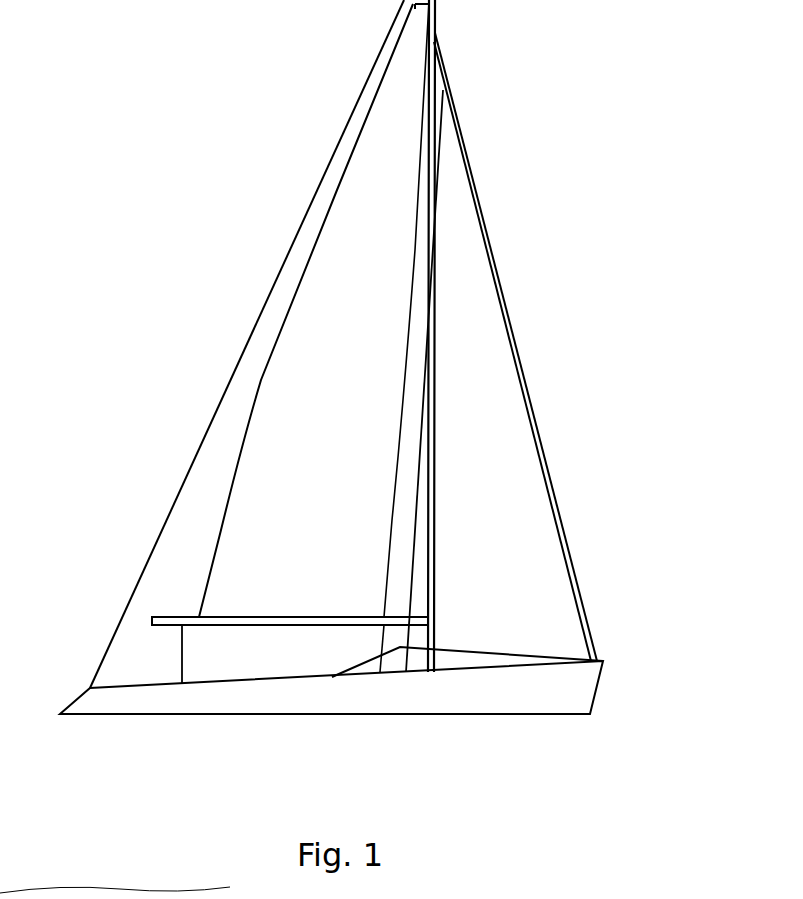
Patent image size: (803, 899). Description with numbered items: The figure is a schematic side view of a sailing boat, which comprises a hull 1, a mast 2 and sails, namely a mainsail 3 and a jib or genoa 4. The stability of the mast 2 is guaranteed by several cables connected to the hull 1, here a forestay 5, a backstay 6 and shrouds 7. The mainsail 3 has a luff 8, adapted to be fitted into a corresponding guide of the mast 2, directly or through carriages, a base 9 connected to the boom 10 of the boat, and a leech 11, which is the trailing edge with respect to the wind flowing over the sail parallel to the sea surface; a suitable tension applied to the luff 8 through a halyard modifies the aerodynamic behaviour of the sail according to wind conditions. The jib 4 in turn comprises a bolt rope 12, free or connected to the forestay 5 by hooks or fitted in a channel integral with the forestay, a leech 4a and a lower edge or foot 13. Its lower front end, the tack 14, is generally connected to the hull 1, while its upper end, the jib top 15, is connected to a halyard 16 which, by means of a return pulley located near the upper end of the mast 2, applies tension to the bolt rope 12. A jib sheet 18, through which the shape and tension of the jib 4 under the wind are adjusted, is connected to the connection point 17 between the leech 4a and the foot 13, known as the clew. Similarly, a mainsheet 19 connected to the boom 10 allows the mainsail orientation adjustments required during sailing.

The hull 1 is at (213, 708).
The mast 2 is at (436, 505).
The mainsail 3 is at (251, 518).
The jib 4 is at (517, 500).
The leech 4a is at (408, 550).
The forestay 5 is at (572, 563).
The backstay 6 is at (160, 545).
The shrouds 7 is at (385, 631).
The luff 8 is at (424, 460).
The base 9 is at (298, 615).
The boom 10 is at (275, 632).
The leech 11 is at (251, 413).
The bolt rope 12 is at (540, 448).
The foot 13 is at (460, 650).
The tack 14 is at (580, 648).
The jib top 15 is at (448, 143).
The halyard 16 is at (439, 68).
The connection point 17 is at (410, 645).
The jib sheet 18 is at (366, 665).
The mainsheet 19 is at (182, 650).